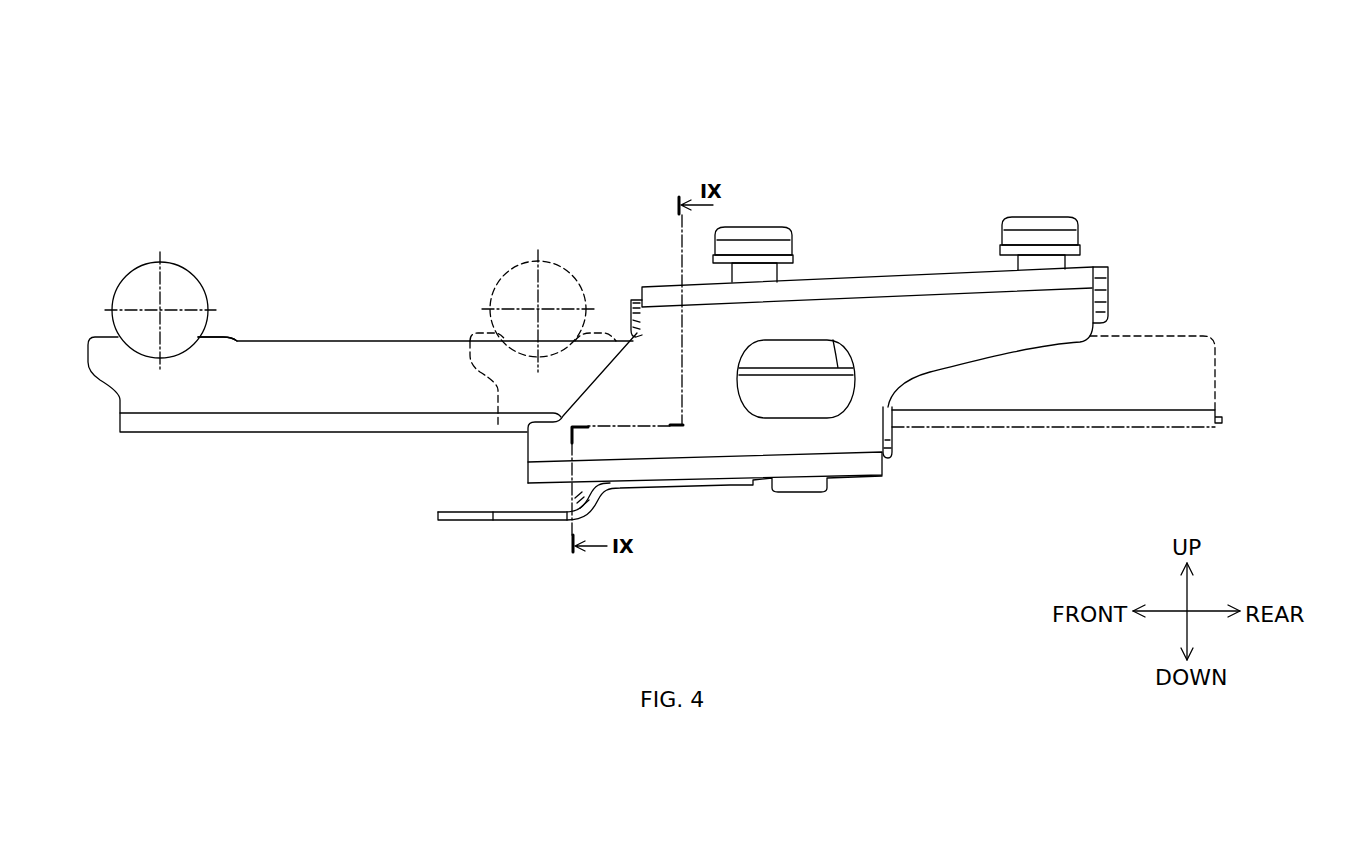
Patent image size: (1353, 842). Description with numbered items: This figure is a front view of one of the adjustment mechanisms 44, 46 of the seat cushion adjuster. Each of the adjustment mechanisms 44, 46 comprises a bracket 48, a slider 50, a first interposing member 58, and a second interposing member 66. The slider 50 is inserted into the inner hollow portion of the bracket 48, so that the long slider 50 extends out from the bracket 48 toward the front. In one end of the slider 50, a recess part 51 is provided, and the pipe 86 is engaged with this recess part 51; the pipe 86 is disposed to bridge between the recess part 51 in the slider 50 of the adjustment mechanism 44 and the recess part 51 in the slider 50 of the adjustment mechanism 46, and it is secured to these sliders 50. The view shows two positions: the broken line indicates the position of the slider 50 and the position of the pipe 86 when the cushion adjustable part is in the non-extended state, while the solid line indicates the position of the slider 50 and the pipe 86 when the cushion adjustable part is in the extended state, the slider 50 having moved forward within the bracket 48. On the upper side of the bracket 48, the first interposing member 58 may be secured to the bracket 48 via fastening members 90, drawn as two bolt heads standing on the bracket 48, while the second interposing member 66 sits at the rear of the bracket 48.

The adjustment mechanism 44 is at (795, 288).
The adjustment mechanism 46 is at (795, 288).
The bracket 48 is at (870, 290).
The slider 50 is at (282, 423).
The recess part 51 is at (207, 333).
The first interposing member 58 is at (1105, 270).
The second interposing member 66 is at (892, 460).
The pipe 86 is at (182, 262).
The fastening member 90 is at (765, 240).